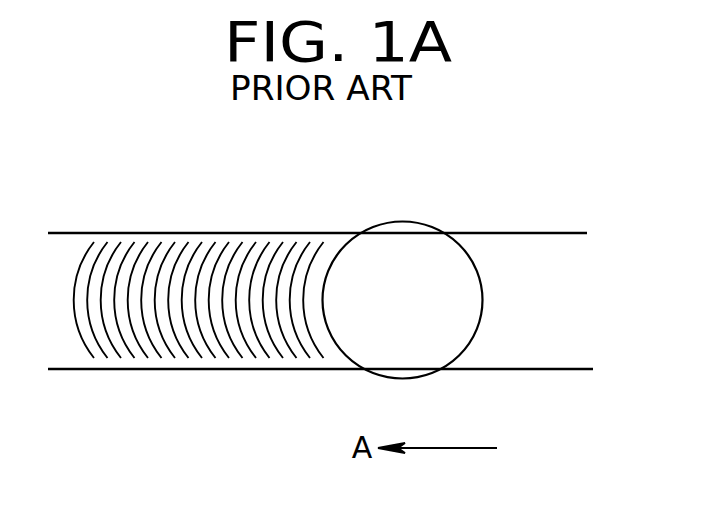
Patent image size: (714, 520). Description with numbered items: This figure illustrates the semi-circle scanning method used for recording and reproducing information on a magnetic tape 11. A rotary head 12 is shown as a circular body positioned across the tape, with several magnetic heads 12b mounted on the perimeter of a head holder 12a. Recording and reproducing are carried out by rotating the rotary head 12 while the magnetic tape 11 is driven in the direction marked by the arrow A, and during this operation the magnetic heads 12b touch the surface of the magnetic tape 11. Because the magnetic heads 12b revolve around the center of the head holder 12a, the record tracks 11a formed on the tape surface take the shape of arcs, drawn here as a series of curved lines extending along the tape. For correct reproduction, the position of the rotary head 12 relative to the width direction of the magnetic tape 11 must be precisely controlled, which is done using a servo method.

The magnetic tape 11 is at (540, 250).
The record tracks 11a is at (78, 260).
The rotary head 12 is at (357, 260).
The head holder 12a is at (378, 246).
The magnetic heads 12b is at (401, 210).